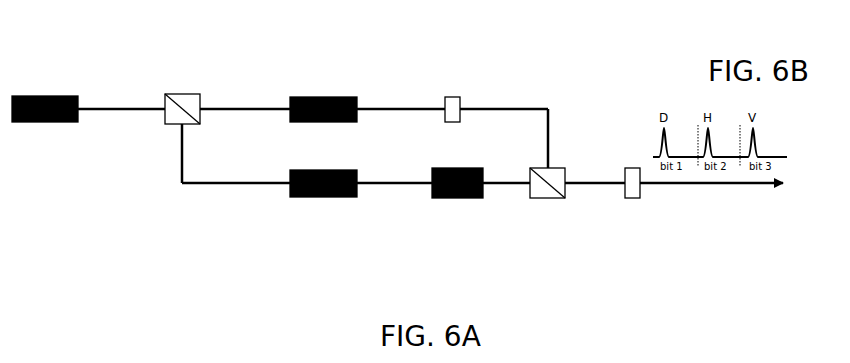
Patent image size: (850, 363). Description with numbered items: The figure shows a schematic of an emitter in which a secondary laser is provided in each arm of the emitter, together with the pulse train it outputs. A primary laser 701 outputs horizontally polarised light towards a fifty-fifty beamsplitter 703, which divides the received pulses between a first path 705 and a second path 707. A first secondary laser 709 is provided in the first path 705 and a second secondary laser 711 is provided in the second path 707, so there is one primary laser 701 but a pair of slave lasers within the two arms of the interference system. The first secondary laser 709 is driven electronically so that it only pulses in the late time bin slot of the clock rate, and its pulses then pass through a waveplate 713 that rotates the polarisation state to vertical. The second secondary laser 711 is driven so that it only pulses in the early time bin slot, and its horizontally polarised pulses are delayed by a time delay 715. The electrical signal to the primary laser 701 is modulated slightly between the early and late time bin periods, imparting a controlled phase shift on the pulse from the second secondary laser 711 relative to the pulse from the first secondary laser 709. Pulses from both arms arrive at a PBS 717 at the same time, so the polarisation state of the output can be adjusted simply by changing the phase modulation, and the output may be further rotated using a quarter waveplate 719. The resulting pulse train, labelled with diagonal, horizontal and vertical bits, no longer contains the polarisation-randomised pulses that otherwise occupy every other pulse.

The primary laser 701 is at (65, 73).
The 50:50 beamsplitter 703 is at (202, 73).
The first path 705 is at (274, 95).
The second path 707 is at (233, 188).
The first secondary laser 709 is at (363, 94).
The second secondary laser 711 is at (338, 206).
The waveplate 713 is at (476, 75).
The time delay 715 is at (463, 219).
The PBS 717 is at (558, 210).
The quarter waveplate 719 is at (630, 157).